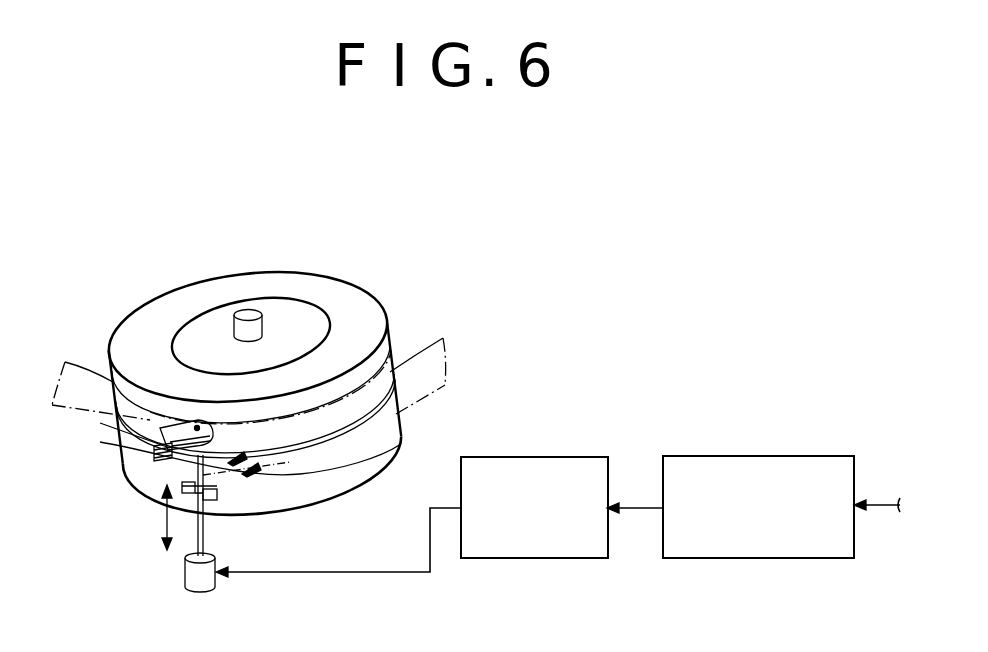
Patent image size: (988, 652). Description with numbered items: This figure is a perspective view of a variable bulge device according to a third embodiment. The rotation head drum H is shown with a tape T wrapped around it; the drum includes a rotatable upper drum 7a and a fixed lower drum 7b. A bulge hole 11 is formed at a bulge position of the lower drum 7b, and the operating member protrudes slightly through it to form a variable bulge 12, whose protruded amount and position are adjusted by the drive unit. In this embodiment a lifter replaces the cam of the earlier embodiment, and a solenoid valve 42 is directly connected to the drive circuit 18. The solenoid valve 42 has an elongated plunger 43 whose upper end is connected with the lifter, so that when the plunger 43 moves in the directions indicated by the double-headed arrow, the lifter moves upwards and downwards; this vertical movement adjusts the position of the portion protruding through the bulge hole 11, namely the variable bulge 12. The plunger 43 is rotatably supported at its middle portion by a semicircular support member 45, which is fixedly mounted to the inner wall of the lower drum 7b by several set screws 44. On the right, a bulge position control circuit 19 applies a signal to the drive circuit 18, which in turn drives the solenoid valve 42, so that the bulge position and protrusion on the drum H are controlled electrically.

The rotation head drum H is at (134, 303).
The magnetic tape T is at (80, 367).
The upper drum 7a is at (376, 318).
The lower drum 7b is at (397, 457).
The variable bulge 12 is at (158, 447).
The bulge hole 11 is at (182, 441).
The semicircular support member 45 is at (214, 498).
The set screws 44 is at (263, 467).
The plunger 43 is at (161, 520).
The solenoid valve 42 is at (196, 578).
The drive circuit 18 is at (582, 558).
The bulge position control circuit 19 is at (755, 558).